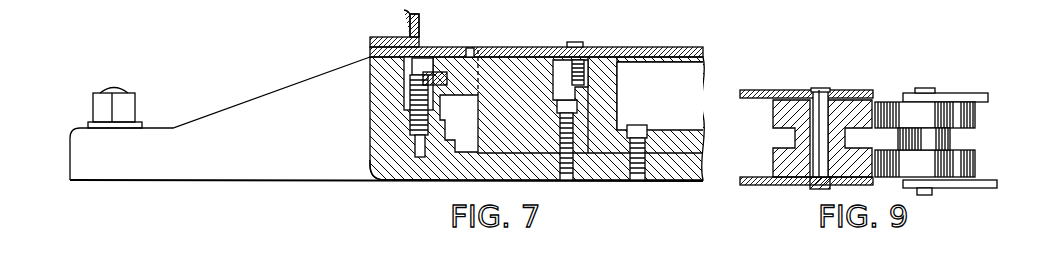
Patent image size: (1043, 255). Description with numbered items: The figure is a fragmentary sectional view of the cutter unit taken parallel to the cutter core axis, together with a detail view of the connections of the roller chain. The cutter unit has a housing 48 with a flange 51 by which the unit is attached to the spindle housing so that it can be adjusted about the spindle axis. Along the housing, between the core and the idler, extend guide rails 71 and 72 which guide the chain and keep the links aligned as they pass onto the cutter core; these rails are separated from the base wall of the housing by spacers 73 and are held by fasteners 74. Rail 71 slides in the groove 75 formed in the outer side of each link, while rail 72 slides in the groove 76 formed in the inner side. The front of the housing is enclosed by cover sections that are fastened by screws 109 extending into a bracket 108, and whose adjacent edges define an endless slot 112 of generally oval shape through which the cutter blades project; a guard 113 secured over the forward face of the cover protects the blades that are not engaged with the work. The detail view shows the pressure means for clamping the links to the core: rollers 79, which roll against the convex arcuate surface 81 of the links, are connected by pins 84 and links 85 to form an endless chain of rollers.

In FIG. 7, the flange 51 is at (289, 148).
In FIG. 7, the spacer 73 is at (372, 95).
In FIG. 7, the fastener 74 is at (370, 57).
In FIG. 7, the guard 113 is at (413, 25).
In FIG. 7, the groove 75 is at (438, 107).
In FIG. 7, the guide rail 71 is at (440, 72).
In FIG. 7, the endless slot 112 is at (478, 48).
In FIG. 7, the groove 76 is at (548, 100).
In FIG. 7, the guide rail 72 is at (556, 95).
In FIG. 7, the screw 109 is at (583, 46).
In FIG. 7, the bracket 108 is at (617, 130).
In FIG. 7, the housing 48 is at (689, 181).
In FIG. 7, the convex arcuate surface 81 is at (440, 181).
In FIG. 9, the link 85 is at (857, 100).
In FIG. 9, the roller 79 is at (778, 122).
In FIG. 9, the pin 84 is at (925, 90).